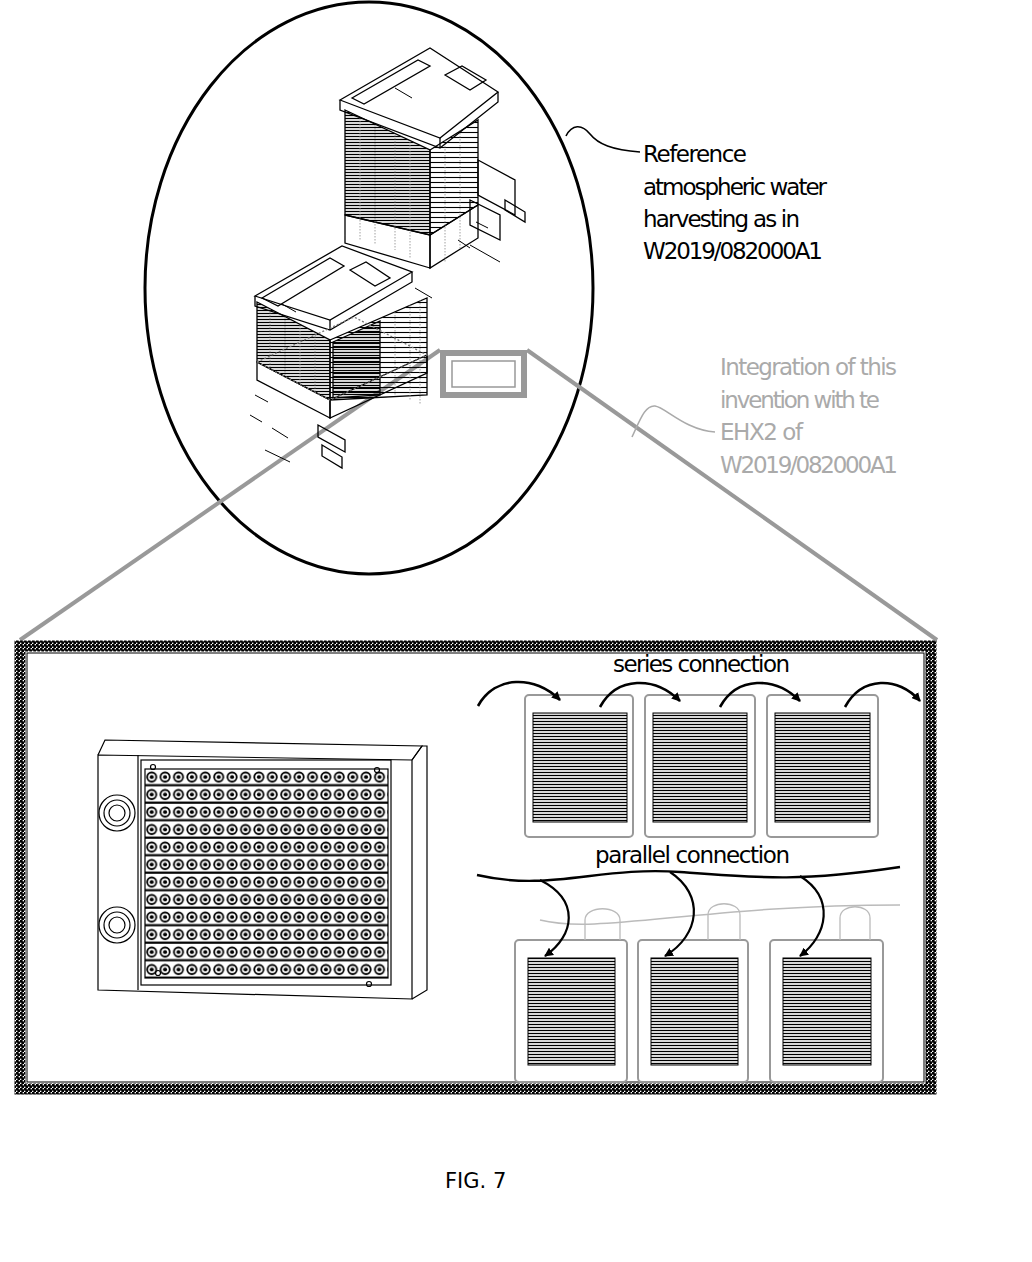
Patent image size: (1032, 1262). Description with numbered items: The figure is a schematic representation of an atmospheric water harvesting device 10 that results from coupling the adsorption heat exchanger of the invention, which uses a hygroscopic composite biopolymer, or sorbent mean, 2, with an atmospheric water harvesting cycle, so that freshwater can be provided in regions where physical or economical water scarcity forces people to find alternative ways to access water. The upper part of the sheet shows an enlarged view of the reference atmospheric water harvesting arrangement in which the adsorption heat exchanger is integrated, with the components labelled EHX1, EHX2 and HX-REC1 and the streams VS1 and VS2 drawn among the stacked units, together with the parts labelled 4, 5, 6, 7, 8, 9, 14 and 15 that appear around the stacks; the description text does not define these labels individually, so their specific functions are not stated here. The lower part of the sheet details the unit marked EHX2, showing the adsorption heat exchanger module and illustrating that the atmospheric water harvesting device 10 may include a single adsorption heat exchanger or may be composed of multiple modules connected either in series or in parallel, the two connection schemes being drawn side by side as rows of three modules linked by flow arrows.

The hygroscopic composite biopolymer (sorbent mean) 2 is at (320, 393).
The top plate 4 is at (424, 52).
The fluid inlet manifold 5 is at (507, 171).
The fluid outlet manifold 6 is at (528, 212).
The water collector pipe 7 is at (471, 212).
The drain line 8 is at (485, 257).
The valve 9 is at (483, 222).
The atmospheric water harvesting device 10 is at (463, 244).
The sorption plate 14 is at (373, 103).
The base plate 15 is at (413, 421).
The vapor stream inlet VS1 is at (409, 91).
The vapor stream outlet VS2 is at (421, 293).
The first electrostatic heat exchanger EHX1 is at (387, 155).
The second electrostatic heat exchanger EHX2 is at (379, 338).
The recuperative heat exchanger HX-REC1 is at (273, 338).